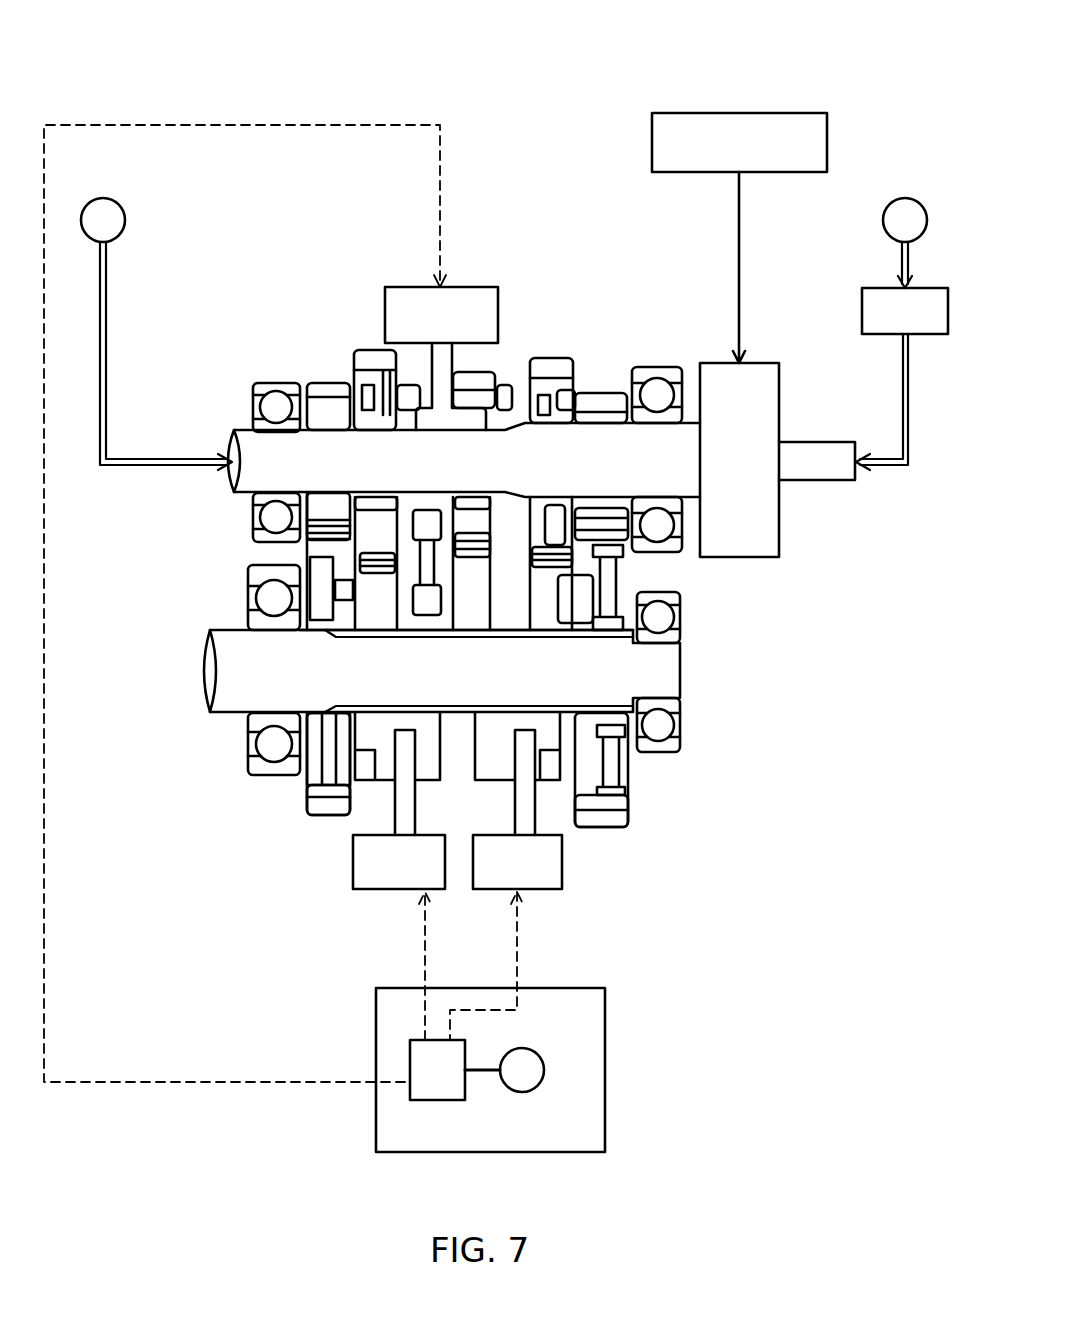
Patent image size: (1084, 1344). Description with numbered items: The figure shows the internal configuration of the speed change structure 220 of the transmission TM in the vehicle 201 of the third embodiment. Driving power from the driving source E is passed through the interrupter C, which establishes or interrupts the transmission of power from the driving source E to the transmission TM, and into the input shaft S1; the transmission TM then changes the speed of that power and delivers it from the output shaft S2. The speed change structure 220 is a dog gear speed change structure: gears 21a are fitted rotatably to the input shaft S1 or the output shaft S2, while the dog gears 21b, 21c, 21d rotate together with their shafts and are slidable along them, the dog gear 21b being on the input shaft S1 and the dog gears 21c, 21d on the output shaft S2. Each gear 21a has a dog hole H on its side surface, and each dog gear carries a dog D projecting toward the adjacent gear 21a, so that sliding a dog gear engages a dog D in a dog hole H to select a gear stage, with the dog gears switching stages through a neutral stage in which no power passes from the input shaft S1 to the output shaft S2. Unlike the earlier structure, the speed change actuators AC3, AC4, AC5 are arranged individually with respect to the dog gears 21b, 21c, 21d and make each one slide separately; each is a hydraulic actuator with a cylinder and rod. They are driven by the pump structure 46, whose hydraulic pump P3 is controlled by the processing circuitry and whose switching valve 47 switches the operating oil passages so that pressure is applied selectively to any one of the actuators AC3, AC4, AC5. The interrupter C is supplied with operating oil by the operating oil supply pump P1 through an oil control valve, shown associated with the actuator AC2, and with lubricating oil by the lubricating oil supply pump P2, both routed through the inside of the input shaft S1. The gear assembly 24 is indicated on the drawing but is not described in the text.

The speed change structure 220 is at (256, 97).
The vehicle 201 is at (888, 50).
The transmission TM is at (774, 1124).
The driving source E is at (780, 113).
The operating oil supply pump P1 is at (908, 198).
The lubricating oil supply pump P2 is at (103, 198).
The hydraulic pump P3 is at (545, 1075).
The actuator AC2 is at (883, 167).
The speed change actuator AC3 is at (472, 287).
The speed change actuator AC4 is at (353, 863).
The speed change actuator AC5 is at (563, 860).
The interrupter C is at (780, 530).
The input shaft S1 is at (240, 432).
The output shaft S2 is at (225, 665).
The gear mechanism 24 is at (282, 359).
The gear 21a is at (350, 362).
The dog gear 21b is at (500, 372).
The dog gear 21c is at (562, 768).
The dog gear 21d is at (365, 757).
The dog hole H is at (384, 372).
The dog D is at (410, 392).
The pump structure 46 is at (605, 1070).
The switching valve 47 is at (428, 1100).